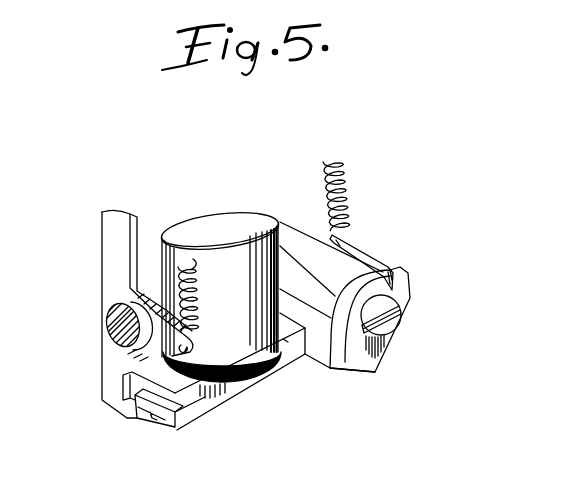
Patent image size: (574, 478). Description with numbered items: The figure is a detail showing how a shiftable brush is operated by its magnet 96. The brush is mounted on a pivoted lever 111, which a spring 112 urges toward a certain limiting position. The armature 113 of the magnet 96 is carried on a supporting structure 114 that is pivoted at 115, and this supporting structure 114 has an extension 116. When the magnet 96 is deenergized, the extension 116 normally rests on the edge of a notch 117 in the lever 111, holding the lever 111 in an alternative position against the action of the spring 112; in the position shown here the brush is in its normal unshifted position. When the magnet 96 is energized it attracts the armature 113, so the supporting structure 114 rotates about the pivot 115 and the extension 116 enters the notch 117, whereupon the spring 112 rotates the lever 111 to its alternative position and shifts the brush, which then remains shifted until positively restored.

The magnet 96 is at (282, 267).
The pivoted lever 111 is at (108, 340).
The spring 112 is at (194, 268).
The armature 113 is at (220, 395).
The supporting structure 114 is at (285, 365).
The pivot 115 is at (401, 322).
The extension 116 is at (163, 417).
The notch 117 is at (123, 388).